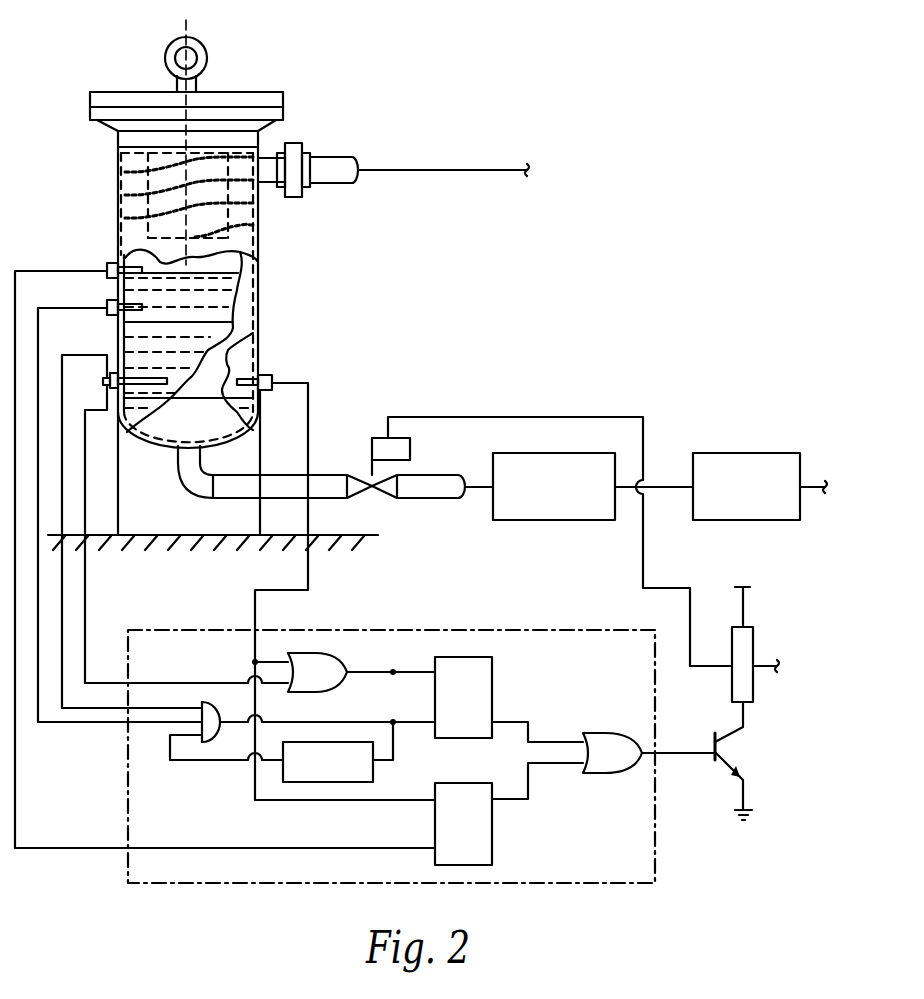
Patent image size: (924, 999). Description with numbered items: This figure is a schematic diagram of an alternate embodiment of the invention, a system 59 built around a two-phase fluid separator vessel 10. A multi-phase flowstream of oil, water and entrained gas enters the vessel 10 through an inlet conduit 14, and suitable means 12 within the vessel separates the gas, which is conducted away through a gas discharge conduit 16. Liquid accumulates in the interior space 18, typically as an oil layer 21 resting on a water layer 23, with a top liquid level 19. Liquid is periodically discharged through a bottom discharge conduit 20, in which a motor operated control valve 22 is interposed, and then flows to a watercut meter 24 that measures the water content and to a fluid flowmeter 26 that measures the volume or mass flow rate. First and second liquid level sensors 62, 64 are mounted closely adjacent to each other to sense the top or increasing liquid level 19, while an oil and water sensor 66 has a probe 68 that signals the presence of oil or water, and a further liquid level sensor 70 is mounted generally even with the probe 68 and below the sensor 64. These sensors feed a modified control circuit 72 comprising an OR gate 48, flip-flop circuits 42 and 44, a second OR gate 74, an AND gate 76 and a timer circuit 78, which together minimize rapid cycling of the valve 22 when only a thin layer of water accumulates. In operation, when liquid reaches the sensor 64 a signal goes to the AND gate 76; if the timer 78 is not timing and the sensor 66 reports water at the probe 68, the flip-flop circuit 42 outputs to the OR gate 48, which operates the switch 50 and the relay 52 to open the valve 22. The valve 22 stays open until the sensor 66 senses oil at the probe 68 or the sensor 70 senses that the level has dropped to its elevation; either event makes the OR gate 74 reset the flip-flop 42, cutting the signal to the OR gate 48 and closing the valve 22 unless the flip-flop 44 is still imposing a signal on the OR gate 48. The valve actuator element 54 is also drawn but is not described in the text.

The separator vessel 10 is at (320, 117).
The means for separating gas from liquid 12 is at (138, 158).
The inlet conduit 14 is at (424, 171).
The gas discharge conduit 16 is at (207, 53).
The interior space 18 is at (202, 317).
The top liquid level 19 is at (257, 261).
The bottom discharge conduit 20 is at (272, 444).
The oil layer 21 is at (232, 300).
The control valve 22 is at (390, 500).
The water layer 23 is at (213, 343).
The watercut meter 24 is at (545, 453).
The fluid flowmeter 26 is at (745, 453).
The flip-flop circuit 42 is at (493, 675).
The flip-flop circuit 44 is at (493, 835).
The OR gate 48 is at (597, 732).
The switch 50 is at (719, 764).
The relay 52 is at (732, 687).
The valve actuator 54 is at (384, 438).
The system 59 is at (568, 293).
The first liquid level sensor 62 is at (108, 262).
The second liquid level sensor 64 is at (107, 306).
The oil and water sensor 66 is at (106, 360).
The probe 68 is at (107, 396).
The liquid level sensor 70 is at (268, 372).
The control circuit 72 is at (507, 620).
The second OR gate 74 is at (320, 652).
The AND gate 76 is at (218, 745).
The timer circuit 78 is at (320, 782).